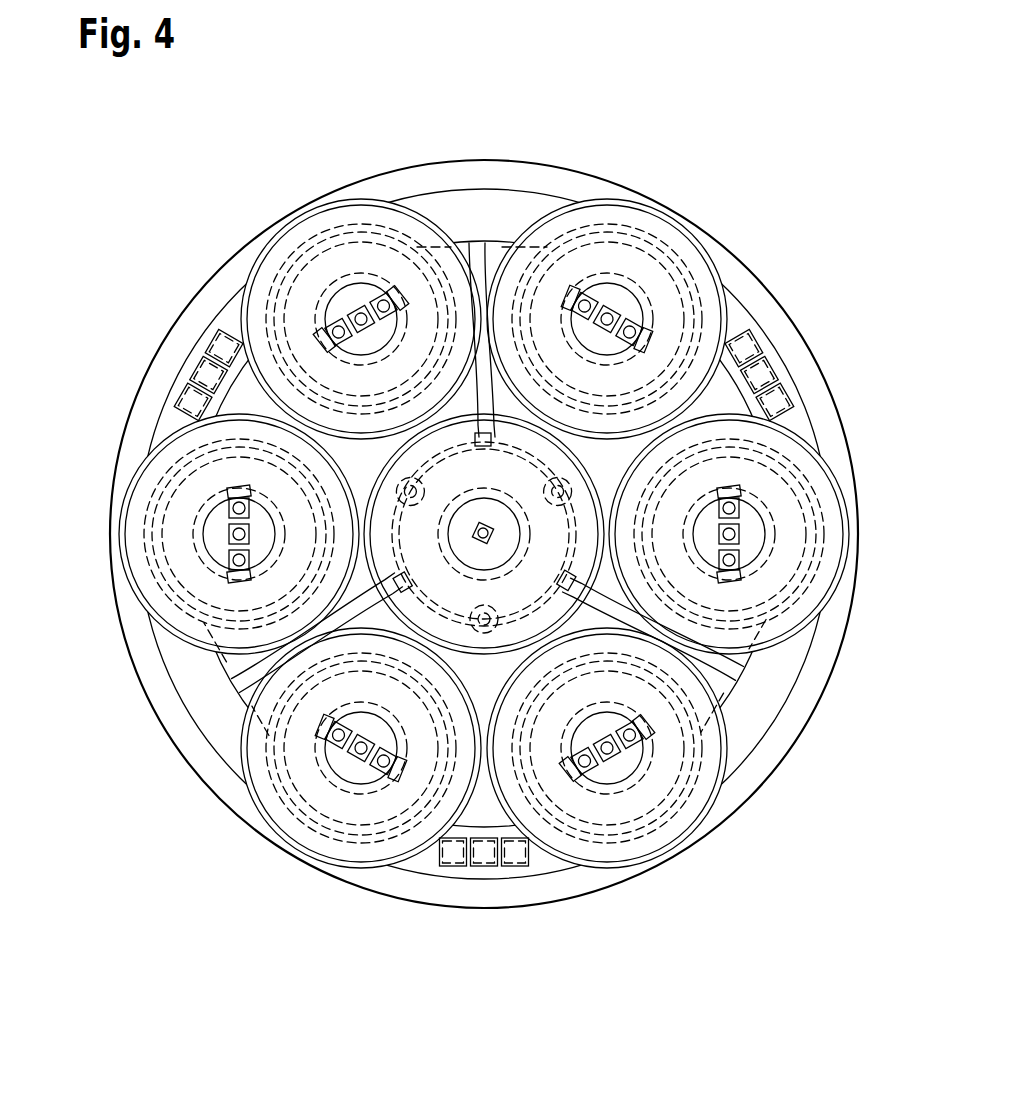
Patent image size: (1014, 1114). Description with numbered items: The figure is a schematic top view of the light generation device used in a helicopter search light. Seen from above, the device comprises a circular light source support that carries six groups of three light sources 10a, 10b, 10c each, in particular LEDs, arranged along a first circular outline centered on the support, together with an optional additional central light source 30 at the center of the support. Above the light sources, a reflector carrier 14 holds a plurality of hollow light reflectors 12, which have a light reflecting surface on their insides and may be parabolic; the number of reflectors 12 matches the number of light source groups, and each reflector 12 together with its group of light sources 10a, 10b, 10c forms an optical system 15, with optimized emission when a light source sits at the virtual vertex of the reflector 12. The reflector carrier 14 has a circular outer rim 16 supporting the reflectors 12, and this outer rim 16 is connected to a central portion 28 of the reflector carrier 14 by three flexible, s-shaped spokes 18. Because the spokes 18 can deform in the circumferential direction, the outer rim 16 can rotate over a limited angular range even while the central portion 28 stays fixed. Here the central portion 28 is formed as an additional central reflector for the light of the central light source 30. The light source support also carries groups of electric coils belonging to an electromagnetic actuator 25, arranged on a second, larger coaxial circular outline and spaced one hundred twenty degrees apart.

The light source 10a is at (384, 306).
The light source 10b is at (359, 315).
The light source 10c is at (337, 330).
The light reflector 12 is at (393, 222).
The reflector carrier 14 is at (805, 272).
The optical system 15 is at (442, 215).
The circular outer rim 16 is at (746, 788).
The spoke 18 is at (490, 250).
The electromagnetic actuator 25 is at (778, 333).
The central portion 28 is at (558, 469).
The central light source 30 is at (483, 545).